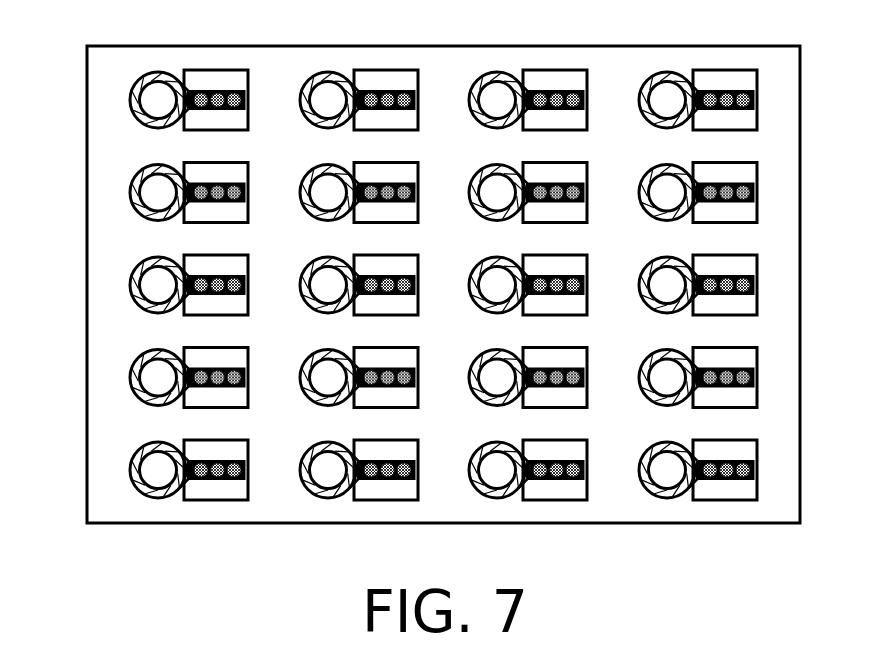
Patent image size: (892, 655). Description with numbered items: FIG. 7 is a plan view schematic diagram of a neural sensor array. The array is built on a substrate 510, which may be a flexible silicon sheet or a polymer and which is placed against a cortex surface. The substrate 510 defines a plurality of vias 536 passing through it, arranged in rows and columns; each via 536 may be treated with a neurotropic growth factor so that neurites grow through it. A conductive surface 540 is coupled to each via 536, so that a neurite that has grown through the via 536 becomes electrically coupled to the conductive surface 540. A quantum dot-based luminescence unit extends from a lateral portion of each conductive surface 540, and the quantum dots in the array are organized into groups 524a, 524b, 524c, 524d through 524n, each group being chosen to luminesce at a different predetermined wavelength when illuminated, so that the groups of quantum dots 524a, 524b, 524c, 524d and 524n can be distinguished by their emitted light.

The substrate 510 is at (275, 70).
The via 536 is at (146, 100).
The conductive surface 540 is at (135, 105).
The quantum dot 524a is at (205, 480).
The quantum dot 524b is at (375, 480).
The quantum dot 524c is at (544, 480).
The quantum dot 524d is at (714, 480).
The quantum dot 524n is at (728, 92).